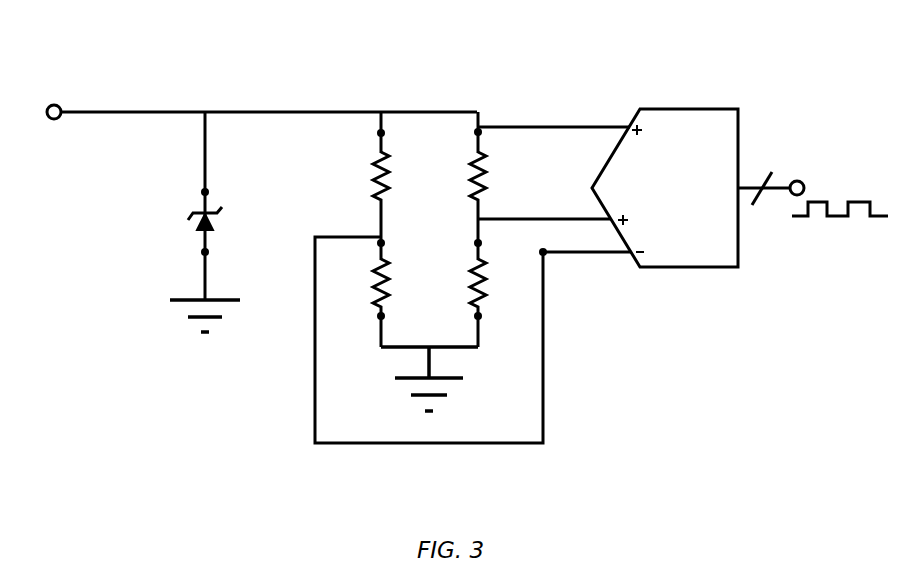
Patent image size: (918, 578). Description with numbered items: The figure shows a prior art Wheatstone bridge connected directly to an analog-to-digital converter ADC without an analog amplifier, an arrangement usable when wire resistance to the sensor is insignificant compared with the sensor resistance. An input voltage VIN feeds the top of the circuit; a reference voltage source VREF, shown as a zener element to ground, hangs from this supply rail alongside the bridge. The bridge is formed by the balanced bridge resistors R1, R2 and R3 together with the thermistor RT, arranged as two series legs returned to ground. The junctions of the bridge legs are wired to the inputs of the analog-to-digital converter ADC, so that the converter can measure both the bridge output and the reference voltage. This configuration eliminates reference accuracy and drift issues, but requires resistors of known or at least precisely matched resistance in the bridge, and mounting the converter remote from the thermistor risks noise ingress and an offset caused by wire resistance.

The input voltage VIN is at (262, 97).
The reference voltage source VREF is at (178, 222).
The bridge resistor R1 is at (358, 174).
The bridge resistor R2 is at (493, 177).
The bridge resistor R3 is at (358, 292).
The thermistor RT is at (494, 293).
The analog-to-digital converter ADC is at (740, 188).